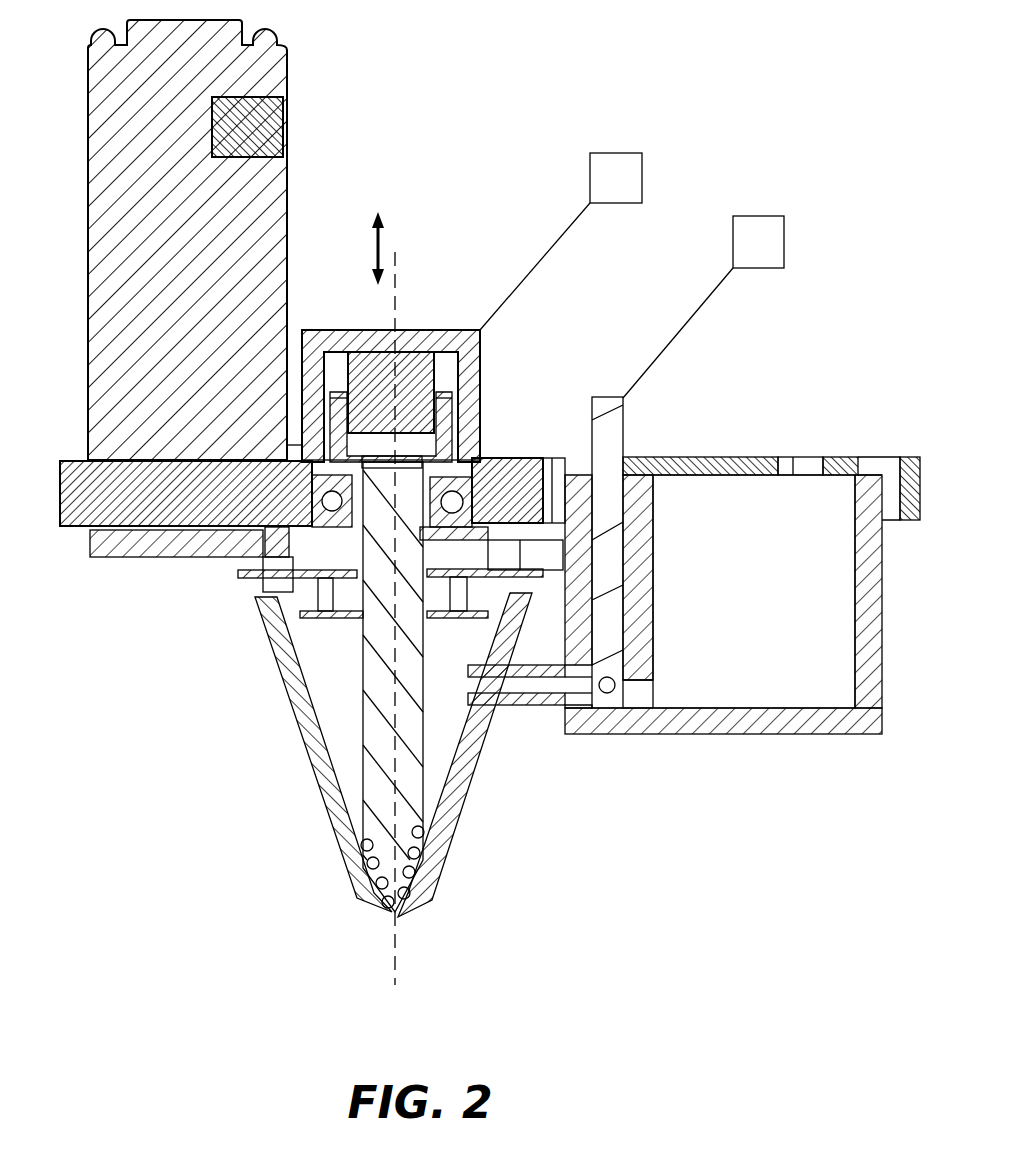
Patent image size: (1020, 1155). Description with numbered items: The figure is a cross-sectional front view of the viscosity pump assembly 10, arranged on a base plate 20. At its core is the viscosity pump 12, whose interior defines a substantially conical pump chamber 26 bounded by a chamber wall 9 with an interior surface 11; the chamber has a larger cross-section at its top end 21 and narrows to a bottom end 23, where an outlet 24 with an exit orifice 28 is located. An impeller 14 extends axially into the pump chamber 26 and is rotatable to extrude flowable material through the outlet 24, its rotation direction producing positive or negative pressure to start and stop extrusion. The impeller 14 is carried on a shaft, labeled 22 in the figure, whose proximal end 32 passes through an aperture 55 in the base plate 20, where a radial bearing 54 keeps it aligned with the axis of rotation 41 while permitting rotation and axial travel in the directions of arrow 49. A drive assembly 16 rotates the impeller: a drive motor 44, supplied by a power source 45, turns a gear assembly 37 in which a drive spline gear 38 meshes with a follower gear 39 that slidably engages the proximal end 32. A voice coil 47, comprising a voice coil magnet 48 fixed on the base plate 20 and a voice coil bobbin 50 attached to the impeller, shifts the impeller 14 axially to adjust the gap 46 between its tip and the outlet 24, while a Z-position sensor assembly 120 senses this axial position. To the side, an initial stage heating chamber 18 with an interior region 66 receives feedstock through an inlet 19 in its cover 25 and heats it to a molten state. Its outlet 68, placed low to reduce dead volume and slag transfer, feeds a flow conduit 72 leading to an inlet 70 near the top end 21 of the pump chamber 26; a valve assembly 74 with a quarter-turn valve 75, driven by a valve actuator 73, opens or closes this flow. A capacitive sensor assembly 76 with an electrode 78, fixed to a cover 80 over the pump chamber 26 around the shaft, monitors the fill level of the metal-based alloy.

The viscosity pump assembly 10 is at (710, 132).
The Z-position sensor assembly 120 is at (625, 152).
The valve actuator 73 is at (776, 215).
The power source 45 is at (285, 125).
The drive assembly 16 is at (310, 180).
The drive motor 44 is at (88, 262).
The arrow 49 is at (372, 248).
The axis of rotation 41 is at (396, 270).
The voice coil magnet 48 is at (413, 330).
The voice coil 47 is at (470, 330).
The gap 46 is at (522, 340).
The voice coil bobbin 50 is at (455, 412).
The proximal end 32 is at (432, 455).
The radial bearing 54 is at (317, 498).
The follower gear 39 is at (478, 490).
The aperture 55 is at (313, 443).
The cover 25 is at (748, 456).
The valve assembly 74 is at (655, 432).
The inlet 19 is at (798, 467).
The base plate 20 is at (888, 478).
The drive spline gear 38 is at (90, 535).
The gear assembly 37 is at (300, 546).
The cover 80 is at (220, 574).
The sensor assembly 76 is at (253, 590).
The top end 21 is at (255, 605).
The electrode 78 is at (262, 623).
The pump chamber 26 is at (330, 695).
The interior surface 11 is at (345, 810).
The viscosity pump 12 is at (215, 815).
The chamber wall 9 is at (343, 867).
The flow conduit 72 is at (548, 706).
The inlet 70 is at (440, 742).
The valve element 22 is at (477, 777).
The impeller 14 is at (443, 833).
The bottom end 23 is at (422, 908).
The exit orifice 28 is at (398, 927).
The outlet 24 is at (385, 917).
The valve 75 is at (607, 694).
The outlet 68 is at (648, 686).
The interior region 66 is at (788, 683).
The initial stage heating chamber 18 is at (857, 750).